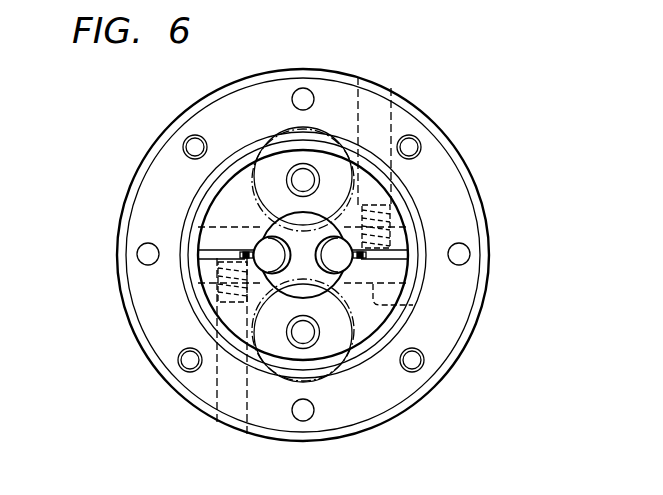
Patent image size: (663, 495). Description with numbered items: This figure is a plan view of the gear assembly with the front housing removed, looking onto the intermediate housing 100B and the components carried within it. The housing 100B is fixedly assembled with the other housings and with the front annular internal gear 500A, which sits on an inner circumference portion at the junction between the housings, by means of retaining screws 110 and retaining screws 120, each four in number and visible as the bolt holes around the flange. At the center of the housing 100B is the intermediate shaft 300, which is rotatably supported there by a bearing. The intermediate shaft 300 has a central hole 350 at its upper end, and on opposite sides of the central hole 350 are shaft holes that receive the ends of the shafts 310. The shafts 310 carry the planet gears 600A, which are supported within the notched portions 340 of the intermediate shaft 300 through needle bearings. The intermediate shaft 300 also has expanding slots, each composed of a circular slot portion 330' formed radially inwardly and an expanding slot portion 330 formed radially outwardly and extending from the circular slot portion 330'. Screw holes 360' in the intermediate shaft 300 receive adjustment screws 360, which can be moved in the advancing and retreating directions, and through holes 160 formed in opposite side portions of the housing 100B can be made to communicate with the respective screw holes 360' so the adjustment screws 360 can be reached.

The intermediate housing 100B is at (483, 288).
The front annular internal gear 500A is at (474, 332).
The retaining screws 110 is at (137, 253).
The retaining screws 120 is at (183, 147).
The through holes 160 is at (215, 392).
The intermediate shaft 300 is at (240, 196).
The shafts 310 is at (300, 336).
The expanding slot portion 330 is at (234, 255).
The circular slot portion 330' is at (346, 303).
The notched portions 340 is at (408, 299).
The central hole 350 is at (265, 228).
The adjustment screws 360 is at (448, 166).
The screw holes 360' is at (155, 295).
The planet gears 600A is at (353, 165).